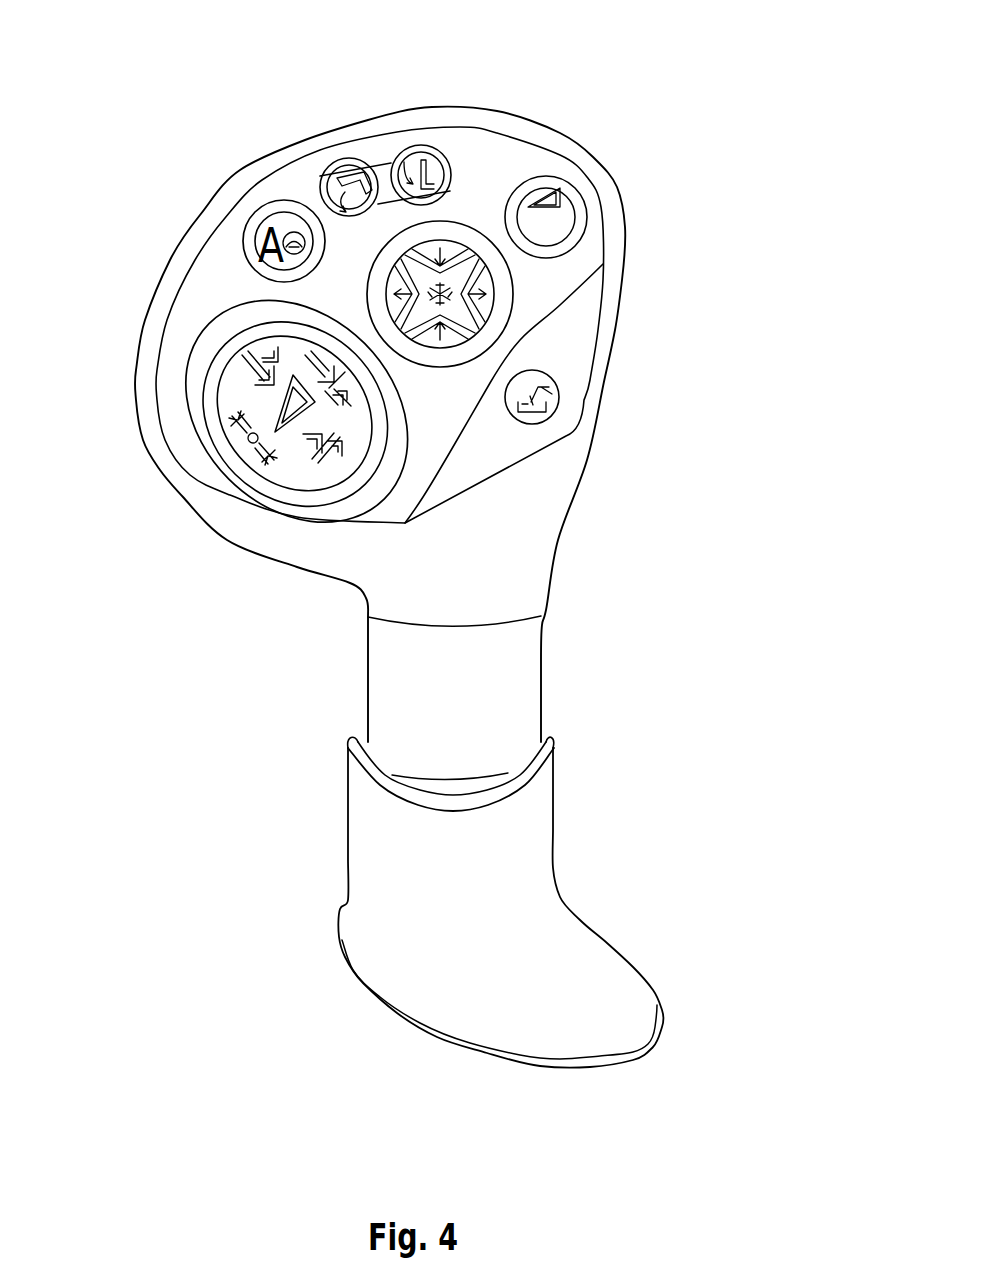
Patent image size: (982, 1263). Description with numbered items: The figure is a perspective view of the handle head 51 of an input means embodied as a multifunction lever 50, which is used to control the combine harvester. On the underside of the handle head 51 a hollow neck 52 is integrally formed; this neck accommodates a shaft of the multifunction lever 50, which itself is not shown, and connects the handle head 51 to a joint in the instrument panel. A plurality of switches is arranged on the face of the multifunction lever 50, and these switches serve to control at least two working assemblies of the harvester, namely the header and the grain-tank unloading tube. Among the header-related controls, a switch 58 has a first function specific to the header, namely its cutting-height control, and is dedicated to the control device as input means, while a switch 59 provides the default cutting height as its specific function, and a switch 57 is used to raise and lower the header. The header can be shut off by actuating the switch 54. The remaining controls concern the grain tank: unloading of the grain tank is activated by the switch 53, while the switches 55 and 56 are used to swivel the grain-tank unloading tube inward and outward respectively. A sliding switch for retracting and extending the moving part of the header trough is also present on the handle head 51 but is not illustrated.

The multifunction lever 50 is at (716, 94).
The handle head 51 is at (634, 220).
The hollow neck 52 is at (542, 693).
The switch for grain-tank unloading 53 is at (559, 397).
The switch for header off 54 is at (572, 186).
The switch for swivelling grain-tank unloading tube inward 55 is at (414, 150).
The switch for swivelling grain-tank unloading tube outward 56 is at (349, 160).
The switch to raise/lower the header 57 is at (243, 361).
The switch for cutting-height control 58 is at (245, 439).
The switch for default cutting height 59 is at (306, 367).